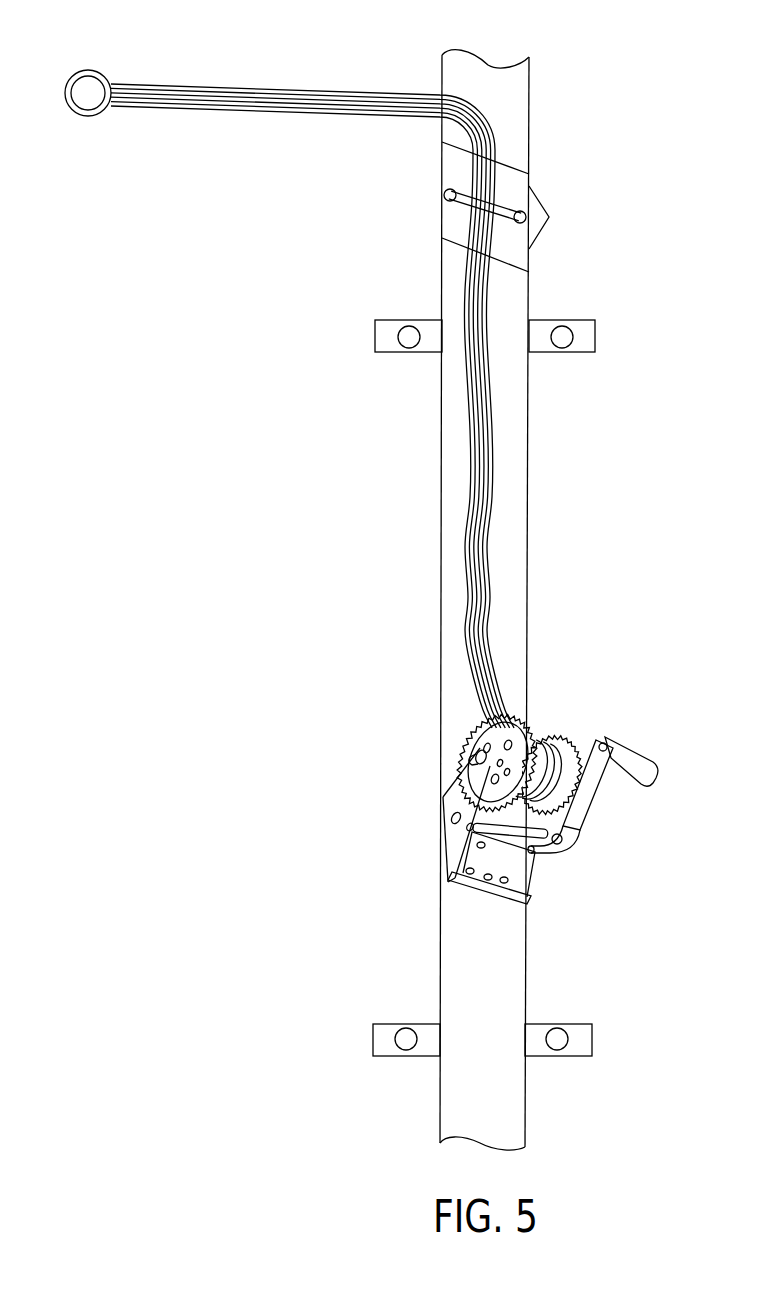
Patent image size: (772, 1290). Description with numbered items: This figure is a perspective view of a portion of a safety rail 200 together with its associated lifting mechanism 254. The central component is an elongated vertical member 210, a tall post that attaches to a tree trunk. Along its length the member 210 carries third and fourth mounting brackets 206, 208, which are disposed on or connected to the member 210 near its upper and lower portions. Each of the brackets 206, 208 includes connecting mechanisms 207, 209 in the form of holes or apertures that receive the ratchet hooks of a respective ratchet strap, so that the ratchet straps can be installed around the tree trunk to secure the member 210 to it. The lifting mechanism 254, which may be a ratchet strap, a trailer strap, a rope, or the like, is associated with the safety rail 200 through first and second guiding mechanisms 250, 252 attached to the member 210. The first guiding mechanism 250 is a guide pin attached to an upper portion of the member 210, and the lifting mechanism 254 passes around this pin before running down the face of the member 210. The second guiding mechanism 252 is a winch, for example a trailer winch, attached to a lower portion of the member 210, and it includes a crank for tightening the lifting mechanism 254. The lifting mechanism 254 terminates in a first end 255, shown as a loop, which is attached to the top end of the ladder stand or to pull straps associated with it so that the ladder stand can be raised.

The safety rail 200 is at (661, 489).
The elongated vertical member 210 is at (490, 75).
The first end of the lifting mechanism 255 is at (83, 69).
The lifting mechanism 254 is at (271, 88).
The first guiding mechanism 250 is at (549, 217).
The third mounting bracket 206 is at (595, 336).
The connecting mechanism 207 is at (557, 349).
The second guiding mechanism 252 is at (594, 803).
The fourth mounting bracket 208 is at (592, 1039).
The connecting mechanism 209 is at (553, 1051).